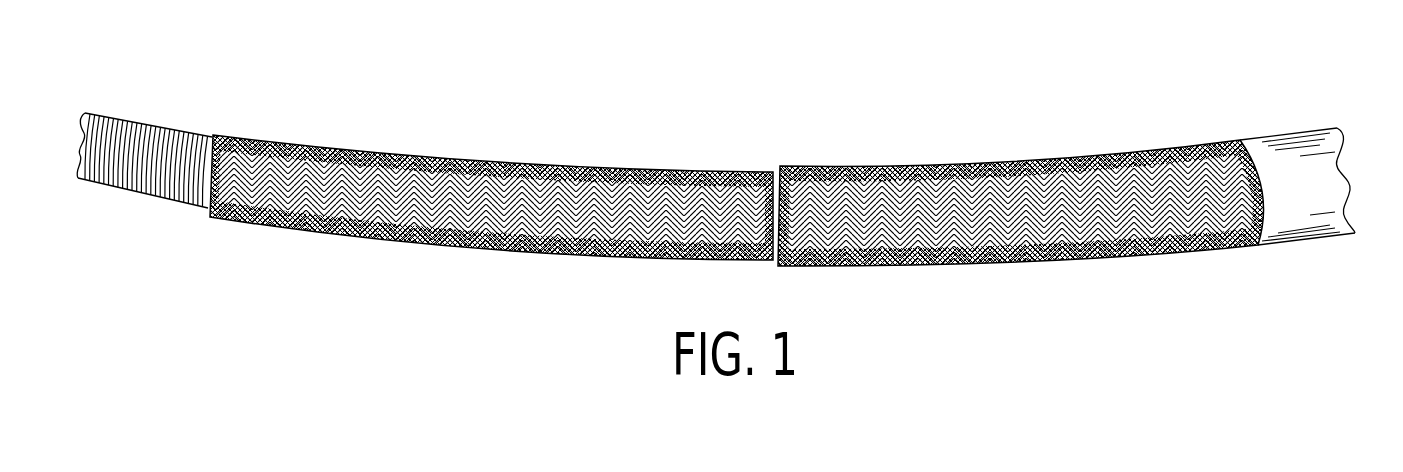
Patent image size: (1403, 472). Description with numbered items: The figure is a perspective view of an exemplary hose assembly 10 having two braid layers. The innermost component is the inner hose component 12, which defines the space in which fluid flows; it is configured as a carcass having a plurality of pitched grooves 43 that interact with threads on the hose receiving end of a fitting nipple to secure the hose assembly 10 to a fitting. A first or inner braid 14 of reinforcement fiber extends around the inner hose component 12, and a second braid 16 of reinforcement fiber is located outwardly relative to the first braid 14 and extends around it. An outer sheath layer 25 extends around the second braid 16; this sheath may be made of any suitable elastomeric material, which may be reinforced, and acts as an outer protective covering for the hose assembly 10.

The hose assembly 10 is at (862, 108).
The inner hose component 12 is at (128, 191).
The first braid 14 is at (343, 239).
The second braid 16 is at (852, 266).
The outer sheath layer 25 is at (1297, 133).
The pitched grooves 43 is at (168, 130).